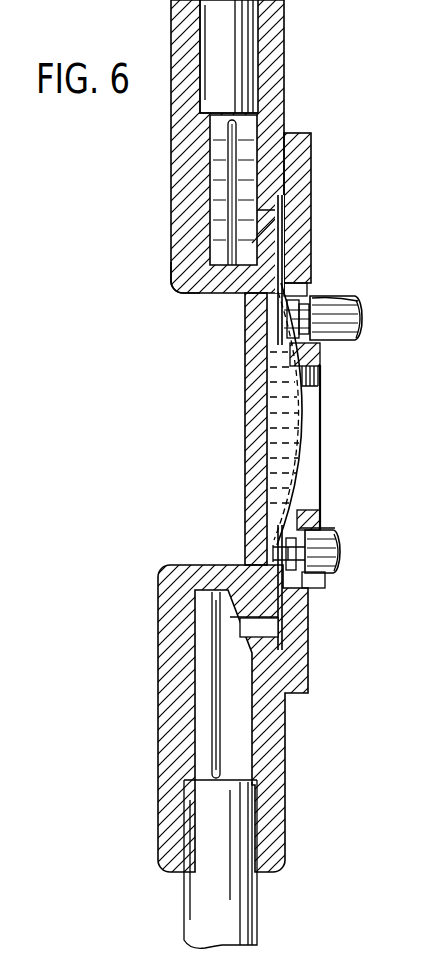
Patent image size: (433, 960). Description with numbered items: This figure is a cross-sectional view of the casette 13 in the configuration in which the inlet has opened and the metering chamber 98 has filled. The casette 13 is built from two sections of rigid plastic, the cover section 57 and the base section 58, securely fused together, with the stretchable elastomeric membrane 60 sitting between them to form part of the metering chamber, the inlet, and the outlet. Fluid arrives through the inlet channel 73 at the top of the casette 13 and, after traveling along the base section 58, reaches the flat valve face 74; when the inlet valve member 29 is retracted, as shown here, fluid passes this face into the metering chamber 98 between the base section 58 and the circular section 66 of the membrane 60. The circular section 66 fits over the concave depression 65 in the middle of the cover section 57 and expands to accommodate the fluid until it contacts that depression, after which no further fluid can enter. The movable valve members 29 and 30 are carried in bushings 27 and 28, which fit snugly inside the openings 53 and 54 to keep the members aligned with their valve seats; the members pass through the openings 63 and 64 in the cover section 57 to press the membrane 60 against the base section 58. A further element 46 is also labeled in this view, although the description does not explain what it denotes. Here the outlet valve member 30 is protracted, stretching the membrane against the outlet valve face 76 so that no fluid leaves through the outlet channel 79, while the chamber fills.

The casette 13 is at (152, 281).
The bushing 27 is at (360, 310).
The bushing 28 is at (333, 540).
The movable valve member 29 is at (367, 333).
The movable valve member 30 is at (340, 552).
The diaphragm chamber 46 is at (312, 412).
The opening 53 is at (333, 300).
The opening 54 is at (323, 515).
The cover section of plastic 57 is at (303, 172).
The base section of plastic 58 is at (172, 282).
The elastomeric membrane 60 is at (290, 237).
The opening 63 is at (327, 374).
The opening 64 is at (295, 512).
The concave depression 65 is at (293, 400).
The circular section of membrane 66 is at (296, 442).
The inlet channel 73 is at (247, 44).
The flat valve face 74 is at (277, 322).
The outlet valve face 76 is at (268, 548).
The outlet channel 79 is at (238, 732).
The metering chamber 98 is at (278, 424).